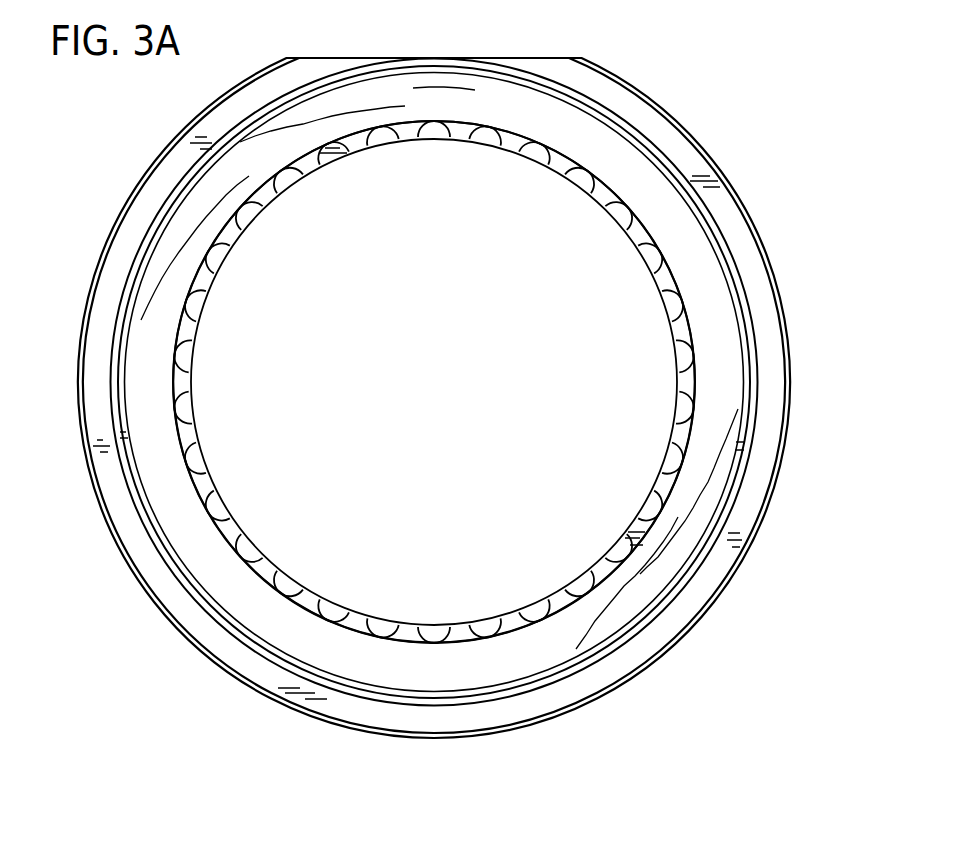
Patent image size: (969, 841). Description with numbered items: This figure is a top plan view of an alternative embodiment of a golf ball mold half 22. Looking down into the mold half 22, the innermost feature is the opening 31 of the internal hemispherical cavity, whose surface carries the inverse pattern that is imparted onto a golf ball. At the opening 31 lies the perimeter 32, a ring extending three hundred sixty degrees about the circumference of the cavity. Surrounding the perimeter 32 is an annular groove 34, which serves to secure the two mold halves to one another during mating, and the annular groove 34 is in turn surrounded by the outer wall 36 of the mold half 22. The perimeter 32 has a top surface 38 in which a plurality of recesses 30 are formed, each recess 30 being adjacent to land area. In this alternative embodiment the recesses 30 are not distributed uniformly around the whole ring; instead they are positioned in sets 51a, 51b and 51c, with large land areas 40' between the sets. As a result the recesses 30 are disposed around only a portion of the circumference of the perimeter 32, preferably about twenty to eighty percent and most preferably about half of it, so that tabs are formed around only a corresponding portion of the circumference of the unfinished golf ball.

The mold half 22 is at (733, 118).
The recesses 30 is at (182, 357).
The opening 31 is at (632, 468).
The perimeter 32 is at (673, 278).
The annular groove 34 is at (676, 539).
The outer wall 36 is at (136, 500).
The top surface 38 is at (305, 606).
The large land areas 40' is at (432, 332).
The first set of recesses 51a is at (404, 657).
The second set of recesses 51b is at (697, 292).
The third set of recesses 51c is at (203, 231).